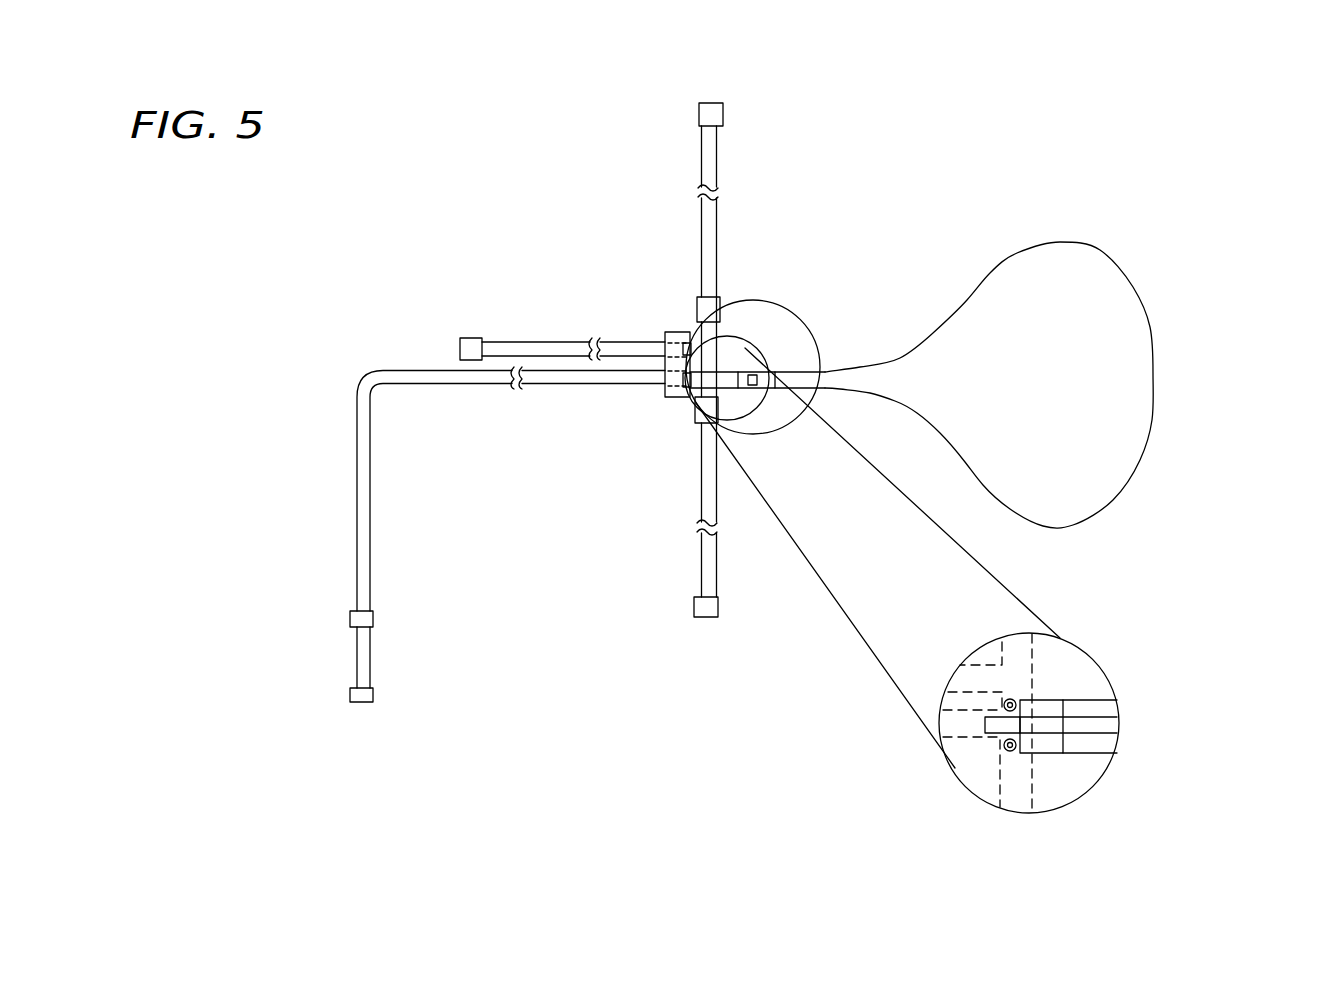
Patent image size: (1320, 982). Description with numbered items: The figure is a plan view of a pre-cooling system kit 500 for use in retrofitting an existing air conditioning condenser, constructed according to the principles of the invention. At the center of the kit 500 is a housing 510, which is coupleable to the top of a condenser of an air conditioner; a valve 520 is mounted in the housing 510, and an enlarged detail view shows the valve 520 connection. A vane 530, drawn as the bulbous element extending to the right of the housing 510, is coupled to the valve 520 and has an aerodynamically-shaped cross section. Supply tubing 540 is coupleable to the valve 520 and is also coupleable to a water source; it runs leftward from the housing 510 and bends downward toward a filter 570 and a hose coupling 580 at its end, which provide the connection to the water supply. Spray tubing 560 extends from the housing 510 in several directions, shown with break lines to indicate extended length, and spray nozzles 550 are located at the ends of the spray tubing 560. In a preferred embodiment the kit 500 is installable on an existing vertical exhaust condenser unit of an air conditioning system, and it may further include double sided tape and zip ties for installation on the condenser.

The pre-cooling system kit 500 is at (1030, 150).
The housing 510 is at (767, 299).
The valve 520 is at (980, 740).
The vane 530 is at (1146, 380).
The supply tubing 540 is at (567, 385).
The spray nozzles 550 is at (716, 116).
The spray tubing 560 is at (545, 340).
The filter 570 is at (363, 652).
The hose coupling 580 is at (383, 680).